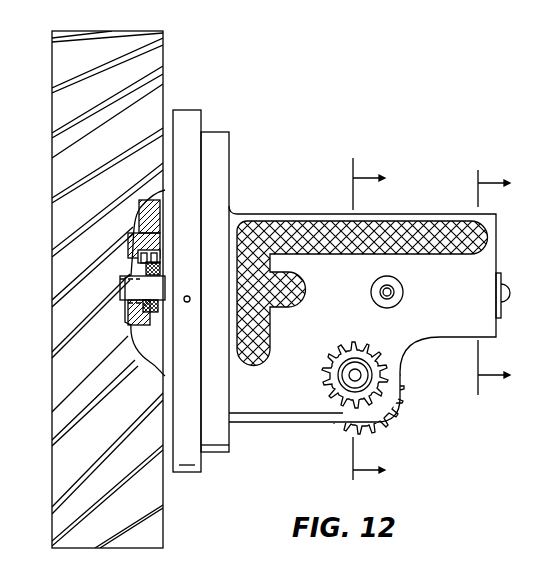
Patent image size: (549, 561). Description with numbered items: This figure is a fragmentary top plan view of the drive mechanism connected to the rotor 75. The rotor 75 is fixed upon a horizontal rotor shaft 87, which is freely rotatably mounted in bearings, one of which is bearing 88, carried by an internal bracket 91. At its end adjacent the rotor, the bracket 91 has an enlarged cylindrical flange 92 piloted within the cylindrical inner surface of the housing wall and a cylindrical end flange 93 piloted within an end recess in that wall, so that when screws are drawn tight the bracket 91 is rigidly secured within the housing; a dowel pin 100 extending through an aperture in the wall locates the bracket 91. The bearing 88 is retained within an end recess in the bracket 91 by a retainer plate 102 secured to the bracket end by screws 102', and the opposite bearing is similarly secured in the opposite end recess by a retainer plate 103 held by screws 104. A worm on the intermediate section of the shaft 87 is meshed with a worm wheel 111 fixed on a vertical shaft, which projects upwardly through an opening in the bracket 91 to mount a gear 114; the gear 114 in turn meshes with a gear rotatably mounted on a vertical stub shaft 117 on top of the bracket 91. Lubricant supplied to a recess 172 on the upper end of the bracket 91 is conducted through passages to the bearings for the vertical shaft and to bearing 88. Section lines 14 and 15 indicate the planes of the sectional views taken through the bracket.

The rotor 75 is at (148, 527).
The rotor shaft 87 is at (162, 287).
The bearing 88 is at (128, 302).
The bracket 91 is at (290, 415).
The cylindrical flange 92 is at (216, 140).
The cylindrical end flange 93 is at (185, 115).
The dowel pin 100 is at (187, 314).
The retainer plate 102 is at (124, 237).
The screws 102' is at (118, 291).
The retainer plate 103 is at (499, 276).
The screws 104 is at (508, 296).
The worm wheel 111 is at (394, 410).
The gear 114 is at (370, 354).
The stub shaft 117 is at (398, 293).
The recess 172 is at (312, 235).
The section line 14- 14 is at (354, 319).
The section line 15- 15 is at (480, 282).